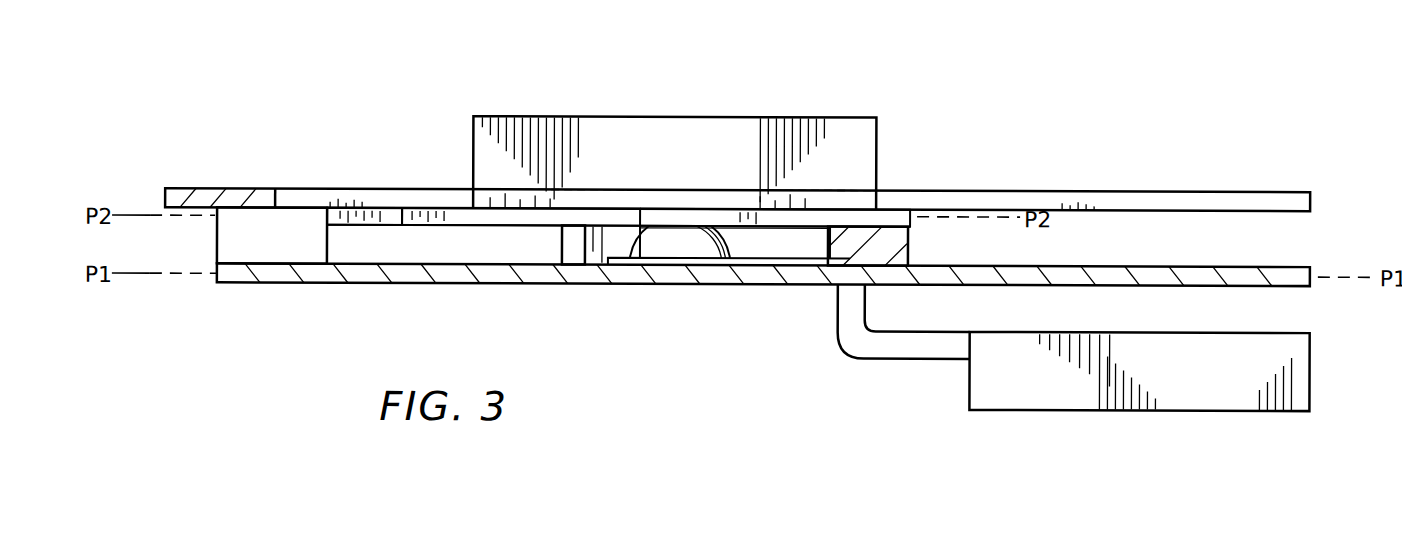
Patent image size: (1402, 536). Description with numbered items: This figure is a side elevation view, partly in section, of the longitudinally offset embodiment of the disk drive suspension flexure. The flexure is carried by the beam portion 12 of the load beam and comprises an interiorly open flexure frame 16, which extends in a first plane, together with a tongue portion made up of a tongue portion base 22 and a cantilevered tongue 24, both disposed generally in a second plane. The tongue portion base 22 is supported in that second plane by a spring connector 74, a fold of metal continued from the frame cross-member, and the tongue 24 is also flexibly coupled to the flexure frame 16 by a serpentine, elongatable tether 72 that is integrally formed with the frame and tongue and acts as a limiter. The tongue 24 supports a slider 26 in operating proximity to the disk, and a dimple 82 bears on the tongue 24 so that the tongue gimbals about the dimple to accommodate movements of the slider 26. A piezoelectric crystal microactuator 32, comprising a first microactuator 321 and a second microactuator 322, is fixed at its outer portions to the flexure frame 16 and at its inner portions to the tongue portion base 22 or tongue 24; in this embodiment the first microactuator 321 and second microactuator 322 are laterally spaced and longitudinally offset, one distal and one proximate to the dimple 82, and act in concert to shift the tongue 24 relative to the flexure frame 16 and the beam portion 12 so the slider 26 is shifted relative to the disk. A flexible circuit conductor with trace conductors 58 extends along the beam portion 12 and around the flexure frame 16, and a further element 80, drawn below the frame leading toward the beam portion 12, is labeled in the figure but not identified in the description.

The beam portion 12 is at (1215, 410).
The flexure frame 16 is at (365, 286).
The tongue portion base 22 is at (450, 212).
The tongue 24 is at (917, 222).
The slider 26 is at (843, 117).
The piezoelectric crystal microactuator 32 is at (740, 164).
The first microactuator 321 is at (560, 240).
The second piezoelectric crystal microactuator 322 is at (890, 237).
The trace conductors 58 is at (219, 172).
The tether 72 is at (383, 212).
The spring connector 74 is at (237, 252).
The connector 80 is at (968, 385).
The dimple 82 is at (668, 242).